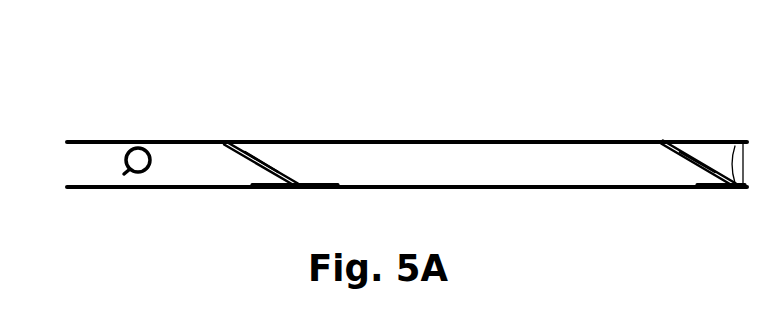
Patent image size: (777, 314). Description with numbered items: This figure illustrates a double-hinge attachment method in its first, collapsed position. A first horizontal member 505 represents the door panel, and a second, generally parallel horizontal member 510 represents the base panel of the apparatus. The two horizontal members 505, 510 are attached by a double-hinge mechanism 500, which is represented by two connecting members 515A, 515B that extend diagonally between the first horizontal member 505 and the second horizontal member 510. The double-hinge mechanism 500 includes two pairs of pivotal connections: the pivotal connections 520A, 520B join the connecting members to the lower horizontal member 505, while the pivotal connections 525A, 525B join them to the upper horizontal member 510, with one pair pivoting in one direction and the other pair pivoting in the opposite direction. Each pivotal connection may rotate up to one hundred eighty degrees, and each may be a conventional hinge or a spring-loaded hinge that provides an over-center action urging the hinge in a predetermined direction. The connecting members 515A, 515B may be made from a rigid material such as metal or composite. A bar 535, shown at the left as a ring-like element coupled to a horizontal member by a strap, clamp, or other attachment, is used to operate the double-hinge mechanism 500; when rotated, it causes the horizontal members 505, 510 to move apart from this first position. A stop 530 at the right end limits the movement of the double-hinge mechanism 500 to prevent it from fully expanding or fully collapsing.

The double-hinge mechanism 500 is at (643, 33).
The first horizontal member 505 is at (545, 190).
The second horizontal member 510 is at (498, 140).
The connecting member 515A is at (273, 157).
The connecting member 515B is at (685, 160).
The pivotal connection 520A is at (280, 186).
The pivotal connection 520B is at (722, 189).
The pivotal connection 525A is at (223, 142).
The pivotal connection 525B is at (682, 142).
The stop 530 is at (735, 190).
The bar 535 is at (126, 167).